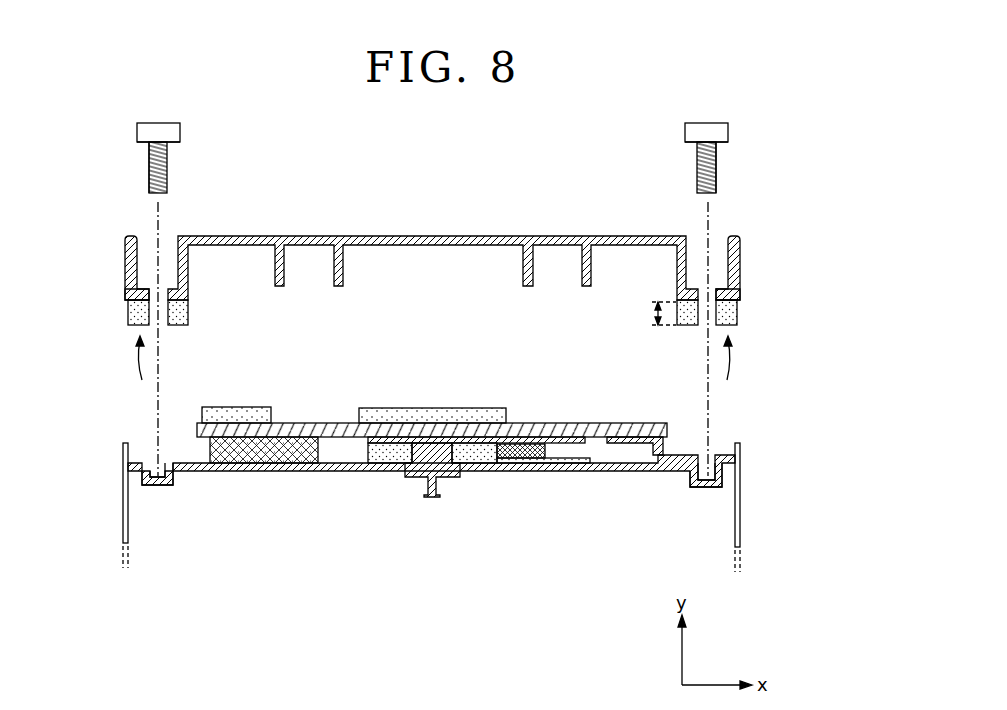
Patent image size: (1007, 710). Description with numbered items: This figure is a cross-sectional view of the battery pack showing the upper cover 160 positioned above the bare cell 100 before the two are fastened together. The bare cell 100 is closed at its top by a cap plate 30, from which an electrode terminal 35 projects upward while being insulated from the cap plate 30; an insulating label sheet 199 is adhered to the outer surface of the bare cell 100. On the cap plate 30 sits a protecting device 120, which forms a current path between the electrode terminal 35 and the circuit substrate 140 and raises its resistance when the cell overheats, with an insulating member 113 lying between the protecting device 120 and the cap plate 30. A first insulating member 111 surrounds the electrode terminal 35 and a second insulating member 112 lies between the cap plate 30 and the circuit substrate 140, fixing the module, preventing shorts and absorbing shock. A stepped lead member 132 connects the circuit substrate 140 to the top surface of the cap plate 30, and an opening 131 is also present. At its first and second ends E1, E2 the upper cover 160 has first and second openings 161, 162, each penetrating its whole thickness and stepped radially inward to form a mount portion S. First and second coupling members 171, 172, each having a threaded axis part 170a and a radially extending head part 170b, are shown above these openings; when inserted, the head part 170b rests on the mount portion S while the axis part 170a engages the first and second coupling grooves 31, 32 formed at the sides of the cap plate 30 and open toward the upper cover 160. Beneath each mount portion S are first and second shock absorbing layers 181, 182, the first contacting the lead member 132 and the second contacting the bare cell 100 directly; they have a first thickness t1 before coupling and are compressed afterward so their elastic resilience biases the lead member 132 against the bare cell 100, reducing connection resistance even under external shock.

The bare cell 100 is at (748, 533).
The cap plate 30 is at (135, 467).
The first coupling groove 31 is at (723, 478).
The second coupling groove 32 is at (140, 474).
The electrode terminal 35 is at (447, 447).
The first insulating member 111 is at (390, 455).
The second insulating member 112 is at (260, 455).
The insulating member 113 is at (540, 461).
The protecting device 120 is at (517, 448).
The opening 131 is at (710, 458).
The lead member 132 is at (626, 448).
The circuit substrate 140 is at (583, 430).
The upper cover 160 is at (480, 236).
The first opening 161 is at (722, 240).
The second opening 162 is at (172, 240).
The axis part 170a is at (155, 166).
The head part 170b is at (148, 131).
The first coupling member 171 is at (708, 123).
The second coupling member 172 is at (158, 123).
The first shock absorbing layer 181 is at (738, 314).
The second shock absorbing layer 182 is at (135, 314).
The insulating label sheet 199 is at (125, 520).
The mount portion S is at (135, 296).
The first thickness t1 is at (655, 313).
The first end E1 is at (727, 371).
The second end E2 is at (140, 371).